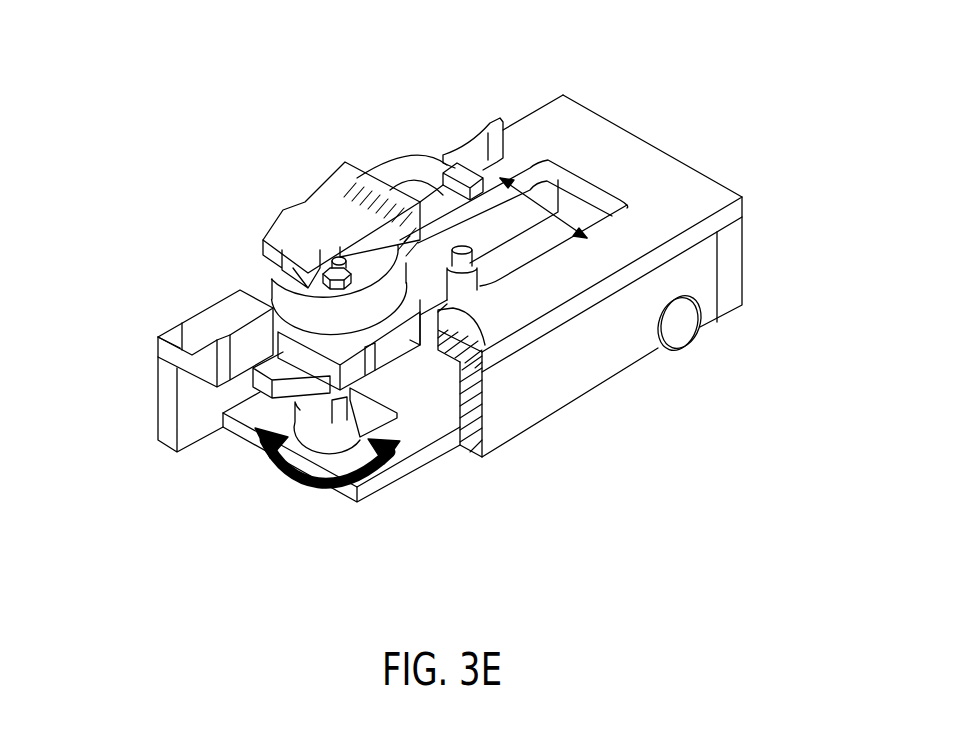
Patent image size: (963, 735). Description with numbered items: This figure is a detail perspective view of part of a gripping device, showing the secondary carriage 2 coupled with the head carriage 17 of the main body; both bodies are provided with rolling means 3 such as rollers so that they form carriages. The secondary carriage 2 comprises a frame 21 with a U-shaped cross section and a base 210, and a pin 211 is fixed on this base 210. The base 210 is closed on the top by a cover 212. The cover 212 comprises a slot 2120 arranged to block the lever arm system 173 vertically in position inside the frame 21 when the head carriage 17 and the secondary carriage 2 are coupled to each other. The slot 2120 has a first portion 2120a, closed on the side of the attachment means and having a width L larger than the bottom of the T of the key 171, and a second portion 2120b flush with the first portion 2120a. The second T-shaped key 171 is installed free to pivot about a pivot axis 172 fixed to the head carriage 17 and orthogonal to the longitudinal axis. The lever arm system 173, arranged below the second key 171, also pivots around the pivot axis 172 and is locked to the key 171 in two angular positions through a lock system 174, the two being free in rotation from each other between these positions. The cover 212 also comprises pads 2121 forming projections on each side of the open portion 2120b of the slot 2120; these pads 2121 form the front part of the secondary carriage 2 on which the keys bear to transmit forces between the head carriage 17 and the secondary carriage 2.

The secondary carriage 2 is at (675, 435).
The rolling means 3 is at (687, 332).
The head carriage 17 is at (318, 213).
The frame 21 is at (620, 355).
The second T-shaped key 171 is at (303, 343).
The pivot axis 172 is at (340, 260).
The lever arm system 173 is at (388, 413).
The lock system 174 is at (481, 155).
The base 210 is at (343, 490).
The pin 211 is at (464, 246).
The cover 212 is at (658, 170).
The slot 2120 is at (578, 208).
The first portion of the slot 2120a is at (632, 205).
The second portion of the slot 2120b is at (213, 375).
The pads 2121 is at (212, 320).